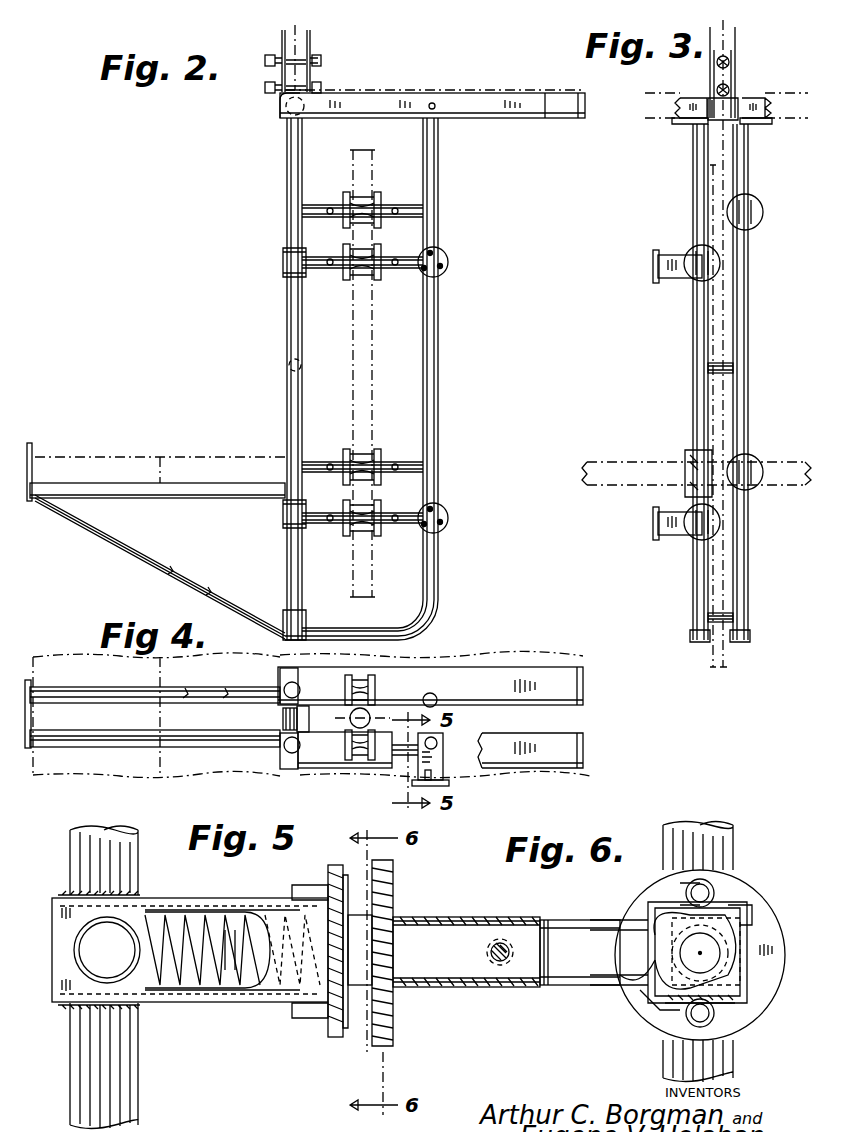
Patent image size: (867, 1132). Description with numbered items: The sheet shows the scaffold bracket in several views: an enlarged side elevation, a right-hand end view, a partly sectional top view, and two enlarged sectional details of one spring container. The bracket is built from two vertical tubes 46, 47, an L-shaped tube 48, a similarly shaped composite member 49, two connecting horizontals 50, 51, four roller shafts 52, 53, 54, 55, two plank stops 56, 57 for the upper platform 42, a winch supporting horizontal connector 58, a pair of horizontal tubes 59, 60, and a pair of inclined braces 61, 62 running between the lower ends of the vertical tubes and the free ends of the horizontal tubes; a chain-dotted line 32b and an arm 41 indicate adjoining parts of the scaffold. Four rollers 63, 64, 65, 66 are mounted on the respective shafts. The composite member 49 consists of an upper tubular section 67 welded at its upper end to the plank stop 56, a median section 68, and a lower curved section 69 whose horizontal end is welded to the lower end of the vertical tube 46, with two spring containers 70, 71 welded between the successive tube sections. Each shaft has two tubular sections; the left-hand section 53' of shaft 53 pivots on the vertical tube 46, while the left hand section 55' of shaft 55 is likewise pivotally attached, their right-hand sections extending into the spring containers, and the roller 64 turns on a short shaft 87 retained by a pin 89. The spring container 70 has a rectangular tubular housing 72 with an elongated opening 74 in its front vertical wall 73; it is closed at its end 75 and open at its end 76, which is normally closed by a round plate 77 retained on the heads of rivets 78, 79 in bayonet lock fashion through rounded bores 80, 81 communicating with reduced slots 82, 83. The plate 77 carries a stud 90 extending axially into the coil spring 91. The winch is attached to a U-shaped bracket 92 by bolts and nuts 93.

In FIG. 2, the centerline of chain conveyor 32b is at (374, 415).
In FIG. 3, the centerline of chain conveyor 32b is at (712, 178).
In FIG. 4, the centerline of chain conveyor 32b is at (372, 716).
In FIG. 2, the supporting arm 41 is at (183, 460).
In FIG. 3, the supporting arm 41 is at (603, 460).
In FIG. 4, the supporting arm 41 is at (195, 773).
In FIG. 2, the upper platform 42 is at (405, 92).
In FIG. 3, the upper platform 42 is at (652, 98).
In FIG. 4, the upper platform 42 is at (548, 658).
In FIG. 2, the vertical tube 46 is at (287, 342).
In FIG. 3, the vertical tube 46 is at (695, 645).
In FIG. 4, the vertical tube 46 is at (280, 755).
In FIG. 3, the vertical tube 47 is at (748, 645).
In FIG. 4, the vertical tube 47 is at (297, 688).
In FIG. 3, the L-shaped tube 48 is at (750, 355).
In FIG. 4, the L-shaped tube 48 is at (434, 698).
In FIG. 2, the composite member 49 is at (482, 354).
In FIG. 3, the composite member 49 is at (690, 372).
In FIG. 2, the connecting horizontal 50 is at (290, 368).
In FIG. 3, the connecting horizontal 50 is at (722, 363).
In FIG. 2, the connecting horizontal 51 is at (283, 612).
In FIG. 3, the connecting horizontal 51 is at (722, 615).
In FIG. 2, the roller shaft 52 is at (327, 204).
In FIG. 2, the roller shaft 53 is at (362, 245).
In FIG. 2, the left-hand tubular section 53' is at (328, 286).
In FIG. 2, the roller shaft 54 is at (322, 461).
In FIG. 2, the roller shaft 55 is at (362, 502).
In FIG. 2, the left hand section 55' is at (320, 542).
In FIG. 2, the plank stop 56 is at (566, 118).
In FIG. 3, the plank stop 56 is at (684, 126).
In FIG. 4, the plank stop 56 is at (584, 750).
In FIG. 3, the plank stop 57 is at (762, 126).
In FIG. 4, the plank stop 57 is at (583, 690).
In FIG. 2, the winch supporting horizontal connector 58 is at (281, 110).
In FIG. 3, the winch supporting horizontal connector 58 is at (736, 102).
In FIG. 4, the winch supporting horizontal connector 58 is at (282, 718).
In FIG. 2, the horizontal tube 59 is at (236, 490).
In FIG. 4, the horizontal tube 59 is at (115, 738).
In FIG. 4, the horizontal tube 60 is at (90, 692).
In FIG. 2, the inclined brace 61 is at (150, 552).
In FIG. 2, the inclined brace 62 is at (196, 576).
In FIG. 4, the inclined brace 62 is at (204, 694).
In FIG. 2, the roller 63 is at (368, 198).
In FIG. 3, the roller 63 is at (764, 214).
In FIG. 4, the roller 63 is at (365, 684).
In FIG. 2, the roller 64 is at (374, 279).
In FIG. 3, the roller 64 is at (720, 262).
In FIG. 4, the roller 64 is at (335, 758).
In FIG. 5, the roller 64 is at (393, 898).
In FIG. 2, the roller 65 is at (370, 456).
In FIG. 3, the roller 65 is at (762, 468).
In FIG. 2, the roller 66 is at (374, 535).
In FIG. 3, the roller 66 is at (716, 521).
In FIG. 2, the upper tubular section 67 is at (440, 204).
In FIG. 3, the upper tubular section 67 is at (705, 150).
In FIG. 4, the upper tubular section 67 is at (440, 745).
In FIG. 5, the upper tubular section 67 is at (138, 868).
In FIG. 6, the upper tubular section 67 is at (688, 838).
In FIG. 2, the median section 68 is at (440, 437).
In FIG. 3, the median section 68 is at (693, 332).
In FIG. 5, the median section 68 is at (138, 1088).
In FIG. 6, the median section 68 is at (735, 1070).
In FIG. 2, the lower curved section 69 is at (440, 593).
In FIG. 3, the lower curved section 69 is at (693, 585).
In FIG. 2, the spring container 70 is at (459, 244).
In FIG. 3, the spring container 70 is at (650, 274).
In FIG. 4, the spring container 70 is at (415, 762).
In FIG. 5, the spring container 70 is at (235, 1030).
In FIG. 6, the spring container 70 is at (626, 1038).
In FIG. 2, the spring container 71 is at (459, 510).
In FIG. 3, the spring container 71 is at (650, 532).
In FIG. 3, the rectangular tubular housing 72 is at (676, 254).
In FIG. 4, the rectangular tubular housing 72 is at (443, 754).
In FIG. 5, the rectangular tubular housing 72 is at (240, 896).
In FIG. 6, the rectangular tubular housing 72 is at (748, 906).
In FIG. 5, the front vertical wall 73 is at (203, 906).
In FIG. 6, the front vertical wall 73 is at (650, 908).
In FIG. 5, the elongated opening 74 is at (135, 1000).
In FIG. 5, the closed end 75 is at (55, 904).
In FIG. 5, the open end 76 is at (333, 908).
In FIG. 2, the round plate 77 is at (449, 266).
In FIG. 4, the round plate 77 is at (423, 772).
In FIG. 5, the round plate 77 is at (342, 1030).
In FIG. 6, the round plate 77 is at (766, 992).
In FIG. 5, the rivet 78 is at (318, 890).
In FIG. 6, the rivet 78 is at (712, 890).
In FIG. 5, the rivet 79 is at (306, 1020).
In FIG. 6, the rivet 79 is at (700, 1000).
In FIG. 6, the rounded bore 80 is at (758, 916).
In FIG. 6, the rounded bore 81 is at (650, 1000).
In FIG. 6, the reduced slot 82 is at (724, 884).
In FIG. 6, the reduced slot 83 is at (690, 1018).
In FIG. 5, the short shaft 87 is at (452, 952).
In FIG. 5, the pin 89 is at (497, 962).
In FIG. 5, the stud 90 is at (256, 982).
In FIG. 6, the stud 90 is at (722, 958).
In FIG. 5, the coil spring 91 is at (208, 976).
In FIG. 6, the coil spring 91 is at (668, 946).
In FIG. 2, the U-shaped bracket 92 is at (312, 80).
In FIG. 3, the U-shaped bracket 92 is at (730, 72).
In FIG. 4, the U-shaped bracket 92 is at (310, 718).
In FIG. 2, the bolts and nuts 93 is at (292, 60).
In FIG. 3, the bolts and nuts 93 is at (717, 90).